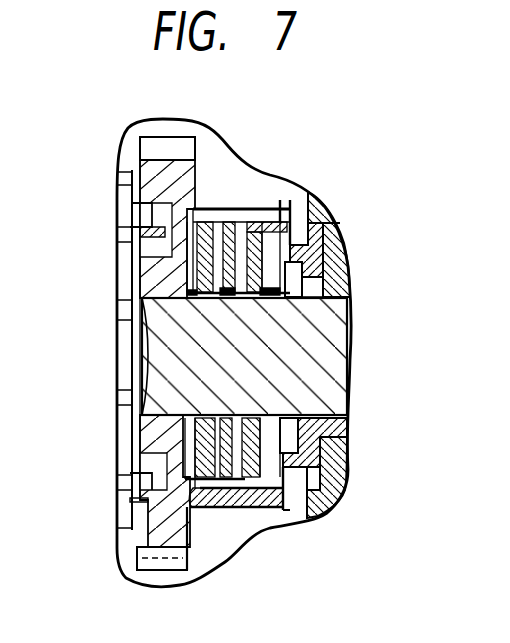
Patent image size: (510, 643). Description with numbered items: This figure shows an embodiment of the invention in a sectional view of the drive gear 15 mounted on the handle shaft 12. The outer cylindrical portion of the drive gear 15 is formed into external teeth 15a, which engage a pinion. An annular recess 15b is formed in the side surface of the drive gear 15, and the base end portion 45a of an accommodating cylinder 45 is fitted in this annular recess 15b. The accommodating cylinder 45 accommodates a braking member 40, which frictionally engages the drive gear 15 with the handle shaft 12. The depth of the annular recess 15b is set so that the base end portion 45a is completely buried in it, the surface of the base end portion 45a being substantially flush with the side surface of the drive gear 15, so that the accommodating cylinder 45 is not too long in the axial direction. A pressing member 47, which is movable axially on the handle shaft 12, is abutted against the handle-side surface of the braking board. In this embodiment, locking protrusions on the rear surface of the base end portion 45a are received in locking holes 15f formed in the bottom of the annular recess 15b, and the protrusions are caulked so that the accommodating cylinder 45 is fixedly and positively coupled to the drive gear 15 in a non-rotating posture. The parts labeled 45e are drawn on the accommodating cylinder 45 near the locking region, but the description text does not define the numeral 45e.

The handle shaft 12 is at (318, 387).
The drive gear 15 is at (197, 169).
The external teeth 15a is at (152, 557).
The annular recess 15b is at (143, 406).
The locking holes 15f is at (148, 243).
The braking member 40 is at (322, 203).
The accommodating cylinder 45 is at (295, 230).
The base end portion 45a is at (187, 510).
The retainer projection 45e is at (145, 222).
The pressing member 47 is at (323, 287).